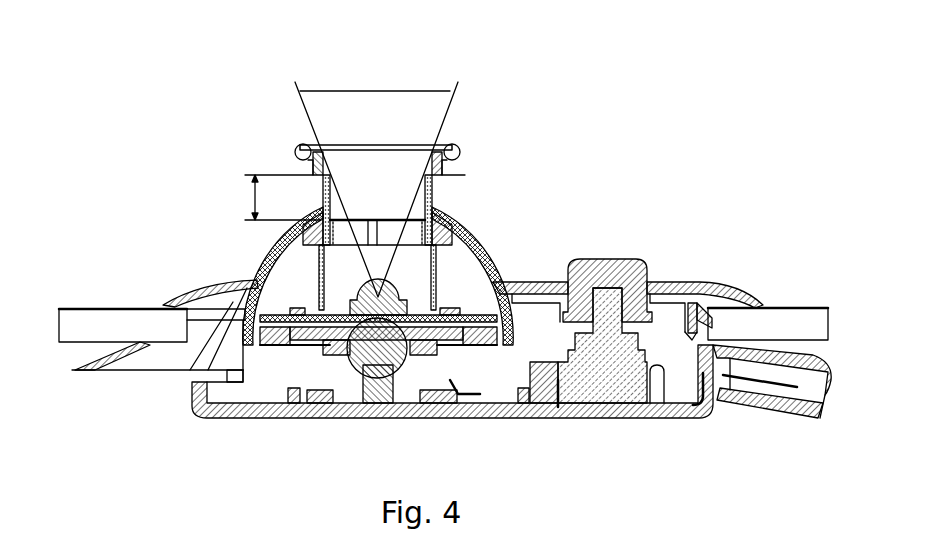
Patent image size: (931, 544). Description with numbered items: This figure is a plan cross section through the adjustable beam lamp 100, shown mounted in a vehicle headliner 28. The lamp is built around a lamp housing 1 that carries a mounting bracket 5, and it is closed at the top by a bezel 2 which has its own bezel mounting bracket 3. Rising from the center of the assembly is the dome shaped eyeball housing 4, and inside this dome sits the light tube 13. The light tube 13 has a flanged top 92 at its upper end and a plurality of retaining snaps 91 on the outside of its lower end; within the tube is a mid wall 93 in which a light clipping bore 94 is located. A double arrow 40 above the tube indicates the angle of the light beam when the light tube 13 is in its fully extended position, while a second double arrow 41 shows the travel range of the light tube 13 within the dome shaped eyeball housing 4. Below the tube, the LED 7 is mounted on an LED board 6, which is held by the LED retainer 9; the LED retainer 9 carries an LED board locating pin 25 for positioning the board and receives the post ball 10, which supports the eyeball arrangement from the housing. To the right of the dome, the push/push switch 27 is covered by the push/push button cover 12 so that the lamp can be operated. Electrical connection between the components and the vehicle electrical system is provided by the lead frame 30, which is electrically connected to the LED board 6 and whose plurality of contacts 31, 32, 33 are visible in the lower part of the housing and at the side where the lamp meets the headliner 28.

The adjustable beam lamp 100 is at (170, 116).
The double arrow (light beam angle) 40 is at (380, 88).
The light tube 13 is at (300, 148).
The flanged top 92 is at (450, 150).
The mid wall 93 is at (417, 235).
The light clipping bore 94 is at (383, 227).
The double arrow (travel range) 41 is at (253, 196).
The dome shaped eyeball housing 4 is at (480, 235).
The retaining snaps 91 is at (297, 247).
The LED 7 is at (400, 293).
The post ball 10 is at (368, 350).
The lamp housing 1 is at (222, 420).
The mounting bracket 5 is at (527, 420).
The contact 31 is at (450, 380).
The push/push switch 27 is at (617, 385).
The contact 32 is at (557, 380).
The push/push button cover 12 is at (625, 260).
The bezel 2 is at (720, 283).
The headliner 28 is at (803, 318).
The LED board locating pin 25 is at (167, 303).
The LED board 6 is at (195, 286).
The bezel mounting bracket 3 is at (130, 372).
The LED retainer 9 is at (200, 373).
The lead frame 30 is at (688, 420).
The contact 33 is at (777, 398).